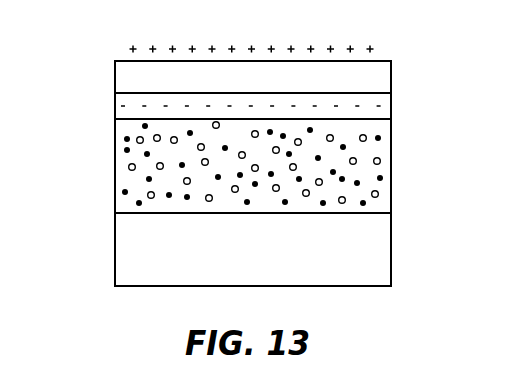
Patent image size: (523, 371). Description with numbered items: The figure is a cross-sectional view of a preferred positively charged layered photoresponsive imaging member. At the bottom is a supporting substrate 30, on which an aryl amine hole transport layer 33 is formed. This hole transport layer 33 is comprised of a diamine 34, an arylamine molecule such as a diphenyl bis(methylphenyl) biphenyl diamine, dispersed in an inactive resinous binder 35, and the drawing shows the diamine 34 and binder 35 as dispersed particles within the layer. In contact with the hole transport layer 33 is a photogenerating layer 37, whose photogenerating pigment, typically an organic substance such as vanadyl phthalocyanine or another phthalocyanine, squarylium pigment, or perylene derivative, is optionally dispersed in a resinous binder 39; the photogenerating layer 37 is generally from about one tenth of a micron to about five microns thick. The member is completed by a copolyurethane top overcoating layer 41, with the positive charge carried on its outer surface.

The substrate 30 is at (391, 238).
The photoconductive layer with particles 33 is at (391, 164).
The first type particles 34 is at (128, 167).
The second type particles 35 is at (122, 191).
The negative charge layer 37 is at (391, 108).
The intermediate layer 39 is at (122, 104).
The top charged layer 41 is at (391, 72).